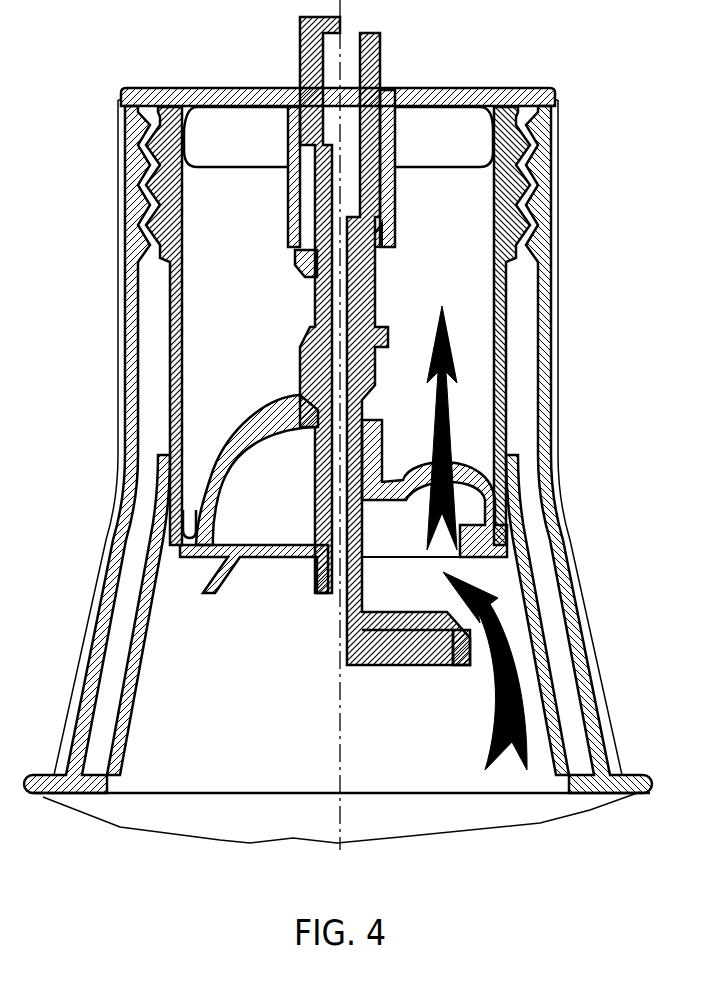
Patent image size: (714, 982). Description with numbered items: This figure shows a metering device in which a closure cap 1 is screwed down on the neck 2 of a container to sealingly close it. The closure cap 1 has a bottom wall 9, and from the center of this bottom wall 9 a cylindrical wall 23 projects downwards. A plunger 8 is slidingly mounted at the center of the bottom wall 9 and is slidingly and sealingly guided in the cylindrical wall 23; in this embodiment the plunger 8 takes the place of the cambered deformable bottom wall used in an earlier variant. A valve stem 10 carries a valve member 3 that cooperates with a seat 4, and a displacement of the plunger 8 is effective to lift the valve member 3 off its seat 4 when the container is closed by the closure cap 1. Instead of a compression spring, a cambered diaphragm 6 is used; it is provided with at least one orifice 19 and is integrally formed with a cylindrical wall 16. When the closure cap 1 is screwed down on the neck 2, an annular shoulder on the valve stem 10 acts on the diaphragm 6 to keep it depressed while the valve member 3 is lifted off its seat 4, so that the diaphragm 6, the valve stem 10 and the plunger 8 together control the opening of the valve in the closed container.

The closure cap 1 is at (543, 317).
The neck 2 is at (552, 353).
The valve member 3 is at (470, 647).
The seat 4 is at (510, 537).
The cambered diaphragm 6 is at (230, 460).
The plunger 8 is at (313, 58).
The bottom wall 9 is at (450, 90).
The valve stem 10 is at (360, 387).
The cylindrical wall 16 is at (173, 303).
The orifice 19 is at (468, 478).
The cylindrical wall 23 is at (293, 193).